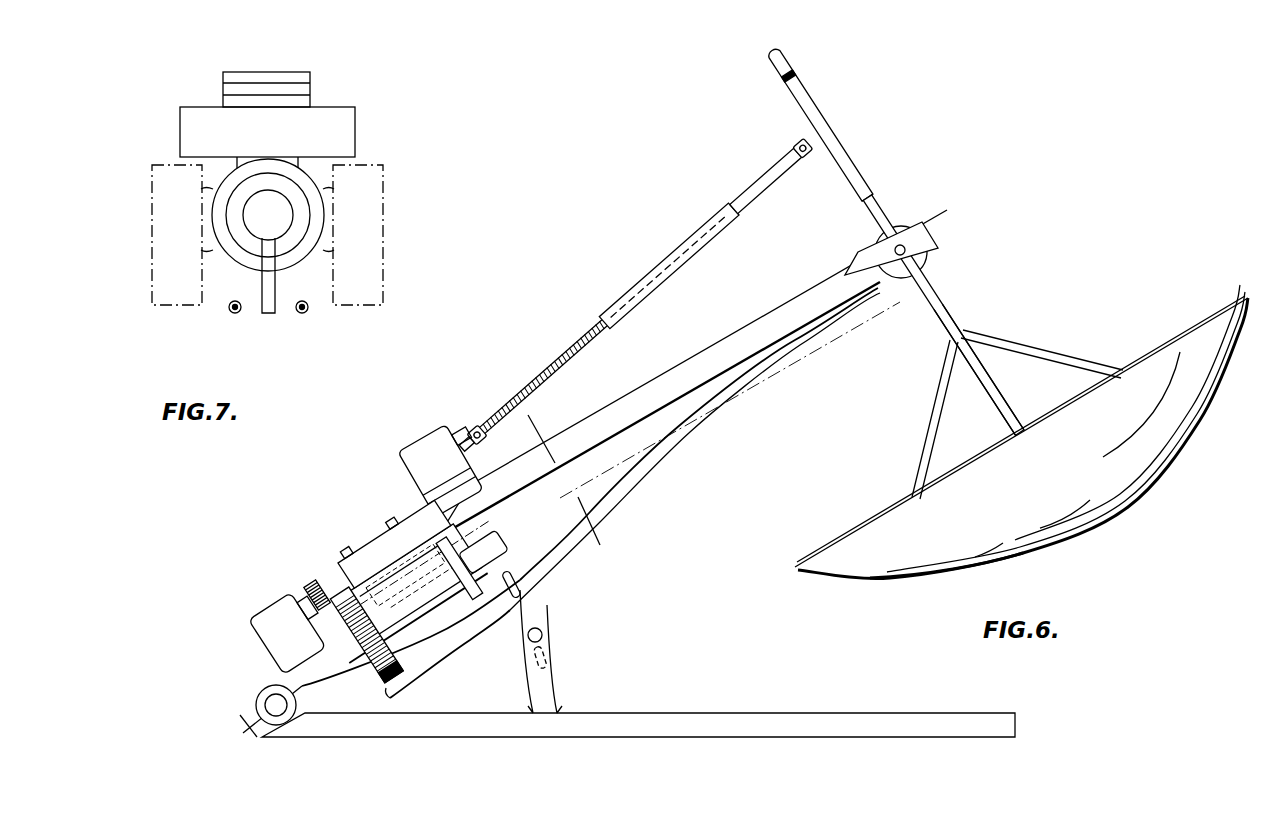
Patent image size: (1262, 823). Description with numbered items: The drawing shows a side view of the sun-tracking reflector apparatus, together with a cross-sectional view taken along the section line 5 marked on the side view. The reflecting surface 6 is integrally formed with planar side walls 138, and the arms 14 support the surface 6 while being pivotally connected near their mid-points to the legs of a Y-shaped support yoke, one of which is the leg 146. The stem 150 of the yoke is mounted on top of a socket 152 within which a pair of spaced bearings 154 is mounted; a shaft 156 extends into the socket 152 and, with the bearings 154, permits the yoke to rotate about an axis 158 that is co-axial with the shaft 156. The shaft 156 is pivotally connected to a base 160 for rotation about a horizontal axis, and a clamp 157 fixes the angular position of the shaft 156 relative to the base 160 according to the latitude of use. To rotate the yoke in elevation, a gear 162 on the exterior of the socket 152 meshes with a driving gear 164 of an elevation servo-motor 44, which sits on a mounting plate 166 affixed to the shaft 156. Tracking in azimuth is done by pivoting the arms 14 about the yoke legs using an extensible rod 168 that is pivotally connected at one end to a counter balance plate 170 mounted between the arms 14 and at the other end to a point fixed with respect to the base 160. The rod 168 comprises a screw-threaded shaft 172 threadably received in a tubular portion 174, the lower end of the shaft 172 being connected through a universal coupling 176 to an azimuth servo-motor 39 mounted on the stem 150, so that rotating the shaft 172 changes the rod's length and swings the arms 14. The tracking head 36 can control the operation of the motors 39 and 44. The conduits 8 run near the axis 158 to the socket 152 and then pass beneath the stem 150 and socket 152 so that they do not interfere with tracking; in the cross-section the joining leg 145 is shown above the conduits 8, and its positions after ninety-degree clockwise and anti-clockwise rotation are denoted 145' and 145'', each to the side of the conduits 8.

In FIG. 6, the section line 5— 5 is at (541, 418).
In FIG. 6, the reflecting surface 6 is at (955, 575).
In FIG. 7, the conduits 8 is at (232, 316).
In FIG. 6, the arms 14 is at (946, 310).
In FIG. 6, the tracking head 36 is at (790, 62).
In FIG. 6, the azimuth servo-motor 39 is at (420, 452).
In FIG. 7, the azimuth servo-motor 39 is at (300, 78).
In FIG. 6, the elevation servo-motor 44 is at (280, 610).
In FIG. 6, the planar side walls 138 is at (964, 549).
In FIG. 7, the leg joining the yoke legs 145 is at (299, 166).
In FIG. 7, the leg position after clockwise rotation 145' is at (392, 235).
In FIG. 7, the leg position after anti-clockwise rotation 145'' is at (146, 235).
In FIG. 6, the leg of the support yoke 146 is at (740, 329).
In FIG. 6, the stem 150 is at (367, 552).
In FIG. 6, the socket 152 is at (450, 634).
In FIG. 7, the socket 152 is at (302, 250).
In FIG. 6, the bearings 154 is at (410, 552).
In FIG. 6, the shaft 156 is at (298, 680).
In FIG. 6, the clamp 157 is at (548, 690).
In FIG. 7, the clamp 157 is at (268, 318).
In FIG. 6, the axis 158 is at (520, 534).
In FIG. 6, the base 160 is at (690, 721).
In FIG. 6, the gear 162 is at (380, 676).
In FIG. 6, the driving gear 164 is at (321, 588).
In FIG. 6, the mounting plate 166 is at (318, 683).
In FIG. 6, the extensible rod 168 is at (638, 271).
In FIG. 6, the counter balance plate 170 is at (840, 114).
In FIG. 6, the shaft of the extensible rod 172 is at (545, 371).
In FIG. 6, the tubular portion 174 is at (732, 199).
In FIG. 6, the universal coupling 176 is at (476, 427).